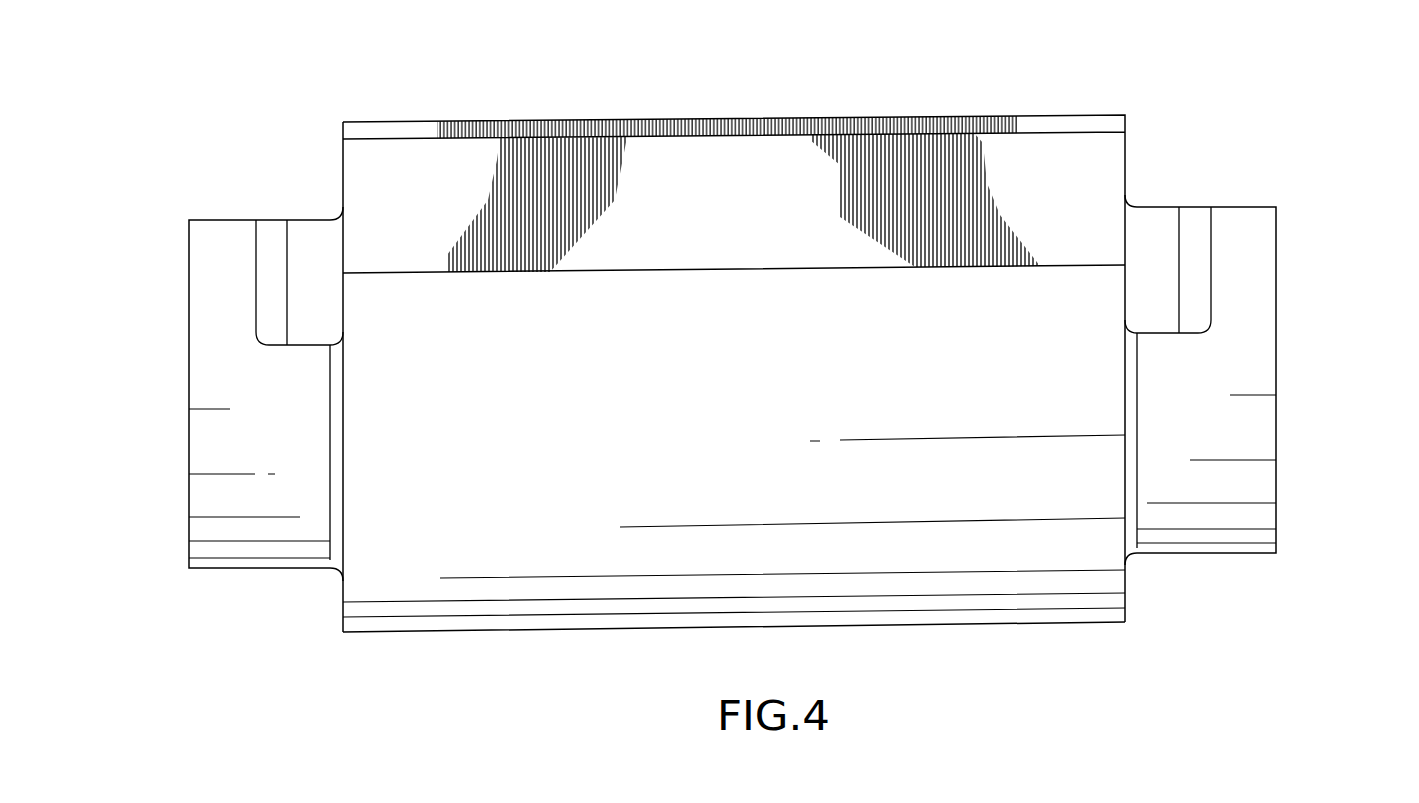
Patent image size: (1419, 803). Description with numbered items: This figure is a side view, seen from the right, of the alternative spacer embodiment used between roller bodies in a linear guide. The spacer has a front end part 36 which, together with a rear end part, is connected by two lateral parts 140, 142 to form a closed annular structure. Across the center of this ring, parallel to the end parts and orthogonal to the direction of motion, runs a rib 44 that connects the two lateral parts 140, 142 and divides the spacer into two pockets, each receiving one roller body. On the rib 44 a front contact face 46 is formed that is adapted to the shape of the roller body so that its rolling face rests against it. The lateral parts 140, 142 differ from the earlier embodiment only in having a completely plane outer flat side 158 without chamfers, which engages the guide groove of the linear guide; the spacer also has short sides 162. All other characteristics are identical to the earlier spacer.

The front end part 36 is at (951, 553).
The rib 44 is at (1125, 148).
The front contact face 46 is at (657, 175).
The lateral part 140 is at (243, 493).
The lateral part 142 is at (1222, 485).
The outer flat side 158 is at (189, 427).
The short side 162 is at (207, 296).